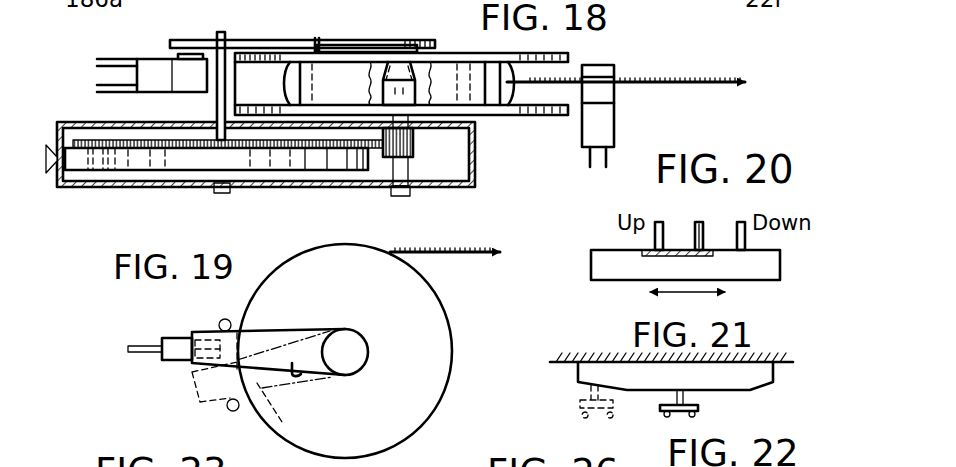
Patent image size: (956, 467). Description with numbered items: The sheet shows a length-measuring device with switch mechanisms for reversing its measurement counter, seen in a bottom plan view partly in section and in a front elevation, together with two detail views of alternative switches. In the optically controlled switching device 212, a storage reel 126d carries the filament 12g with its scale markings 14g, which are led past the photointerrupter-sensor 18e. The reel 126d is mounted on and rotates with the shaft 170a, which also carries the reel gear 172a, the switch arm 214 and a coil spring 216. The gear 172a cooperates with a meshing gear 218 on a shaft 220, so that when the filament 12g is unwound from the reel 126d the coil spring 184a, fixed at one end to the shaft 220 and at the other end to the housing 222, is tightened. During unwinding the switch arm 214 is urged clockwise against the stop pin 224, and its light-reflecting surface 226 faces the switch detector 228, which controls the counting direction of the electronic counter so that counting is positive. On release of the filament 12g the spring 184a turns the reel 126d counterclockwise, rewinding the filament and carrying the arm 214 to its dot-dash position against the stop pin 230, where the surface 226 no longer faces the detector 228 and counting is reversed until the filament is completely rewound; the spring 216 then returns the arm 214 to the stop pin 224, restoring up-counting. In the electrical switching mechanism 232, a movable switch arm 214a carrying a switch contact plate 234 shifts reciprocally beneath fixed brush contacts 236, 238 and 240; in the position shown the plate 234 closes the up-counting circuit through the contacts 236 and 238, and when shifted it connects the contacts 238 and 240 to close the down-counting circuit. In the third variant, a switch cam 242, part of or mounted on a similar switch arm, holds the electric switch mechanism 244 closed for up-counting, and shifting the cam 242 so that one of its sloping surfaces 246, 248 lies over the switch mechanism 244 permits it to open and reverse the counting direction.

In FIG. 18, the filament 12g is at (742, 79).
In FIG. 19, the filament 12g is at (467, 256).
In FIG. 18, the scale markings 14g is at (714, 80).
In FIG. 18, the photointerrupter-sensor 18e is at (614, 122).
In FIG. 18, the storage reel 126d is at (518, 116).
In FIG. 19, the storage reel 126d is at (436, 344).
In FIG. 18, the shaft 170a is at (409, 170).
In FIG. 18, the reel gear 172a is at (414, 136).
In FIG. 18, the coil spring 184a is at (174, 163).
In FIG. 18, the optically controlled switching device 212 is at (620, 44).
In FIG. 18, the switch arm 214 is at (290, 28).
In FIG. 19, the switch arm 214 is at (310, 328).
In FIG. 20, the movable switch arm 214a is at (748, 273).
In FIG. 18, the coil spring 216 is at (388, 46).
In FIG. 19, the coil spring 216 is at (301, 378).
In FIG. 18, the meshing gear 218 is at (332, 156).
In FIG. 18, the shaft 220 is at (238, 183).
In FIG. 18, the housing 222 is at (106, 187).
In FIG. 19, the stop pin 224 is at (223, 319).
In FIG. 18, the light-reflecting surface 226 is at (176, 55).
In FIG. 18, the switch detector 228 is at (148, 70).
In FIG. 19, the switch detector 228 is at (180, 357).
In FIG. 19, the stop pin 230 is at (233, 411).
In FIG. 20, the switching mechanism 232 is at (596, 242).
In FIG. 20, the switch contact plate 234 is at (646, 257).
In FIG. 20, the fixed brush contact 236 is at (657, 222).
In FIG. 20, the fixed brush contact 238 is at (695, 224).
In FIG. 20, the fixed brush contact 240 is at (745, 236).
In FIG. 21, the switch cam 242 is at (720, 379).
In FIG. 21, the electric switch mechanism 244 is at (679, 413).
In FIG. 21, the sloping surface 246 is at (589, 383).
In FIG. 21, the sloping surface 248 is at (758, 385).